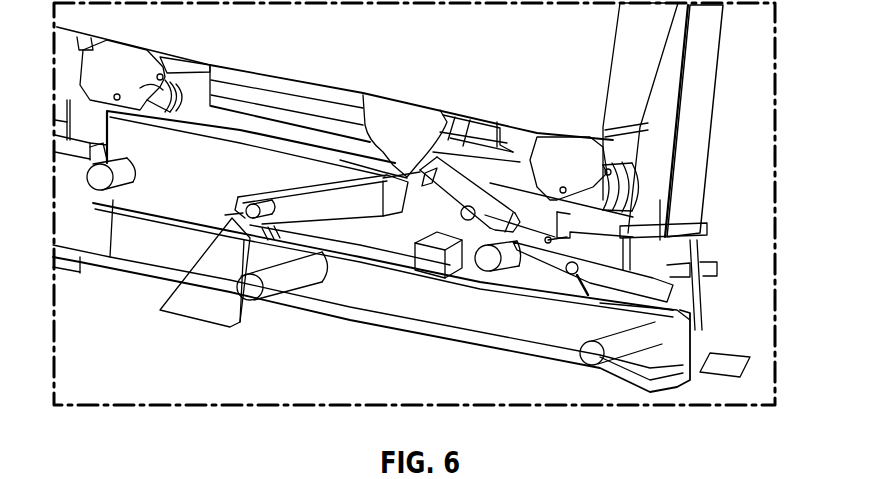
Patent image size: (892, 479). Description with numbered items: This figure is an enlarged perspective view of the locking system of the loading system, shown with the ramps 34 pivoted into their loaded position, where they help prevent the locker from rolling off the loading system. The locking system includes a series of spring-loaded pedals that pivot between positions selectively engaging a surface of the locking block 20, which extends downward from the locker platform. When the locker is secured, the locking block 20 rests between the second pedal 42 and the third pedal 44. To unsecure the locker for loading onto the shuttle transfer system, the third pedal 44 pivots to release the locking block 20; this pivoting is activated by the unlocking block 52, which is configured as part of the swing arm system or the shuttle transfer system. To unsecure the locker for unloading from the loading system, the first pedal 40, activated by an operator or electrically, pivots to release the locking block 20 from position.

The locking block 20 is at (410, 127).
The second pedal 42 is at (477, 187).
The ramp 34 is at (693, 130).
The unlocking block 52 is at (213, 290).
The third pedal 44 is at (383, 217).
The first pedal 40 is at (603, 280).